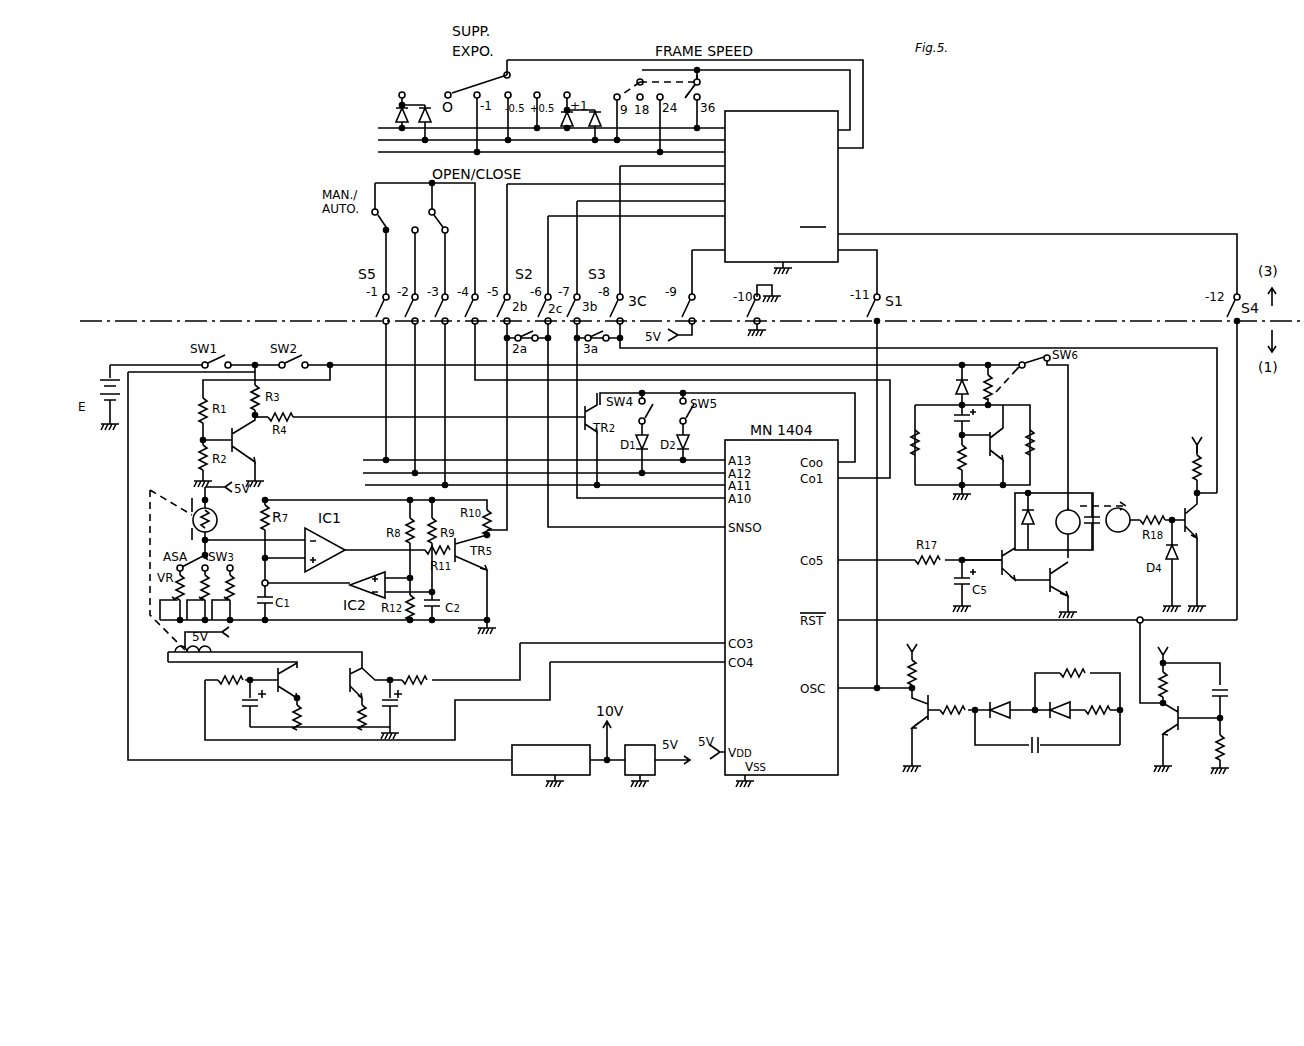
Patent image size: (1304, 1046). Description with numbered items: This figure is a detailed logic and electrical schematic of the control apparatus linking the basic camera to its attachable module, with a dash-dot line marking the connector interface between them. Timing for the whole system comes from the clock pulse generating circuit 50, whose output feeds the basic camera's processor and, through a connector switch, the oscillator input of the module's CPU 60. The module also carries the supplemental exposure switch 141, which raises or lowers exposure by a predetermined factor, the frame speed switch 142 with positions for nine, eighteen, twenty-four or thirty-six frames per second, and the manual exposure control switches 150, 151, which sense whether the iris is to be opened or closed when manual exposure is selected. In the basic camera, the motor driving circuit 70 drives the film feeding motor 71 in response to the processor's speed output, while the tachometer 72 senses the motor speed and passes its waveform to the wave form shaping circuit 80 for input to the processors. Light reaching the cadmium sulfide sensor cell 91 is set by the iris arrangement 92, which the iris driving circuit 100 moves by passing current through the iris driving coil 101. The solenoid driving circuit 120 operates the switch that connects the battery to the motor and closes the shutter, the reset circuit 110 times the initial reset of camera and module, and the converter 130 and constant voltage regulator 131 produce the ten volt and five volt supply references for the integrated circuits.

The supplemental exposure switch 141 is at (490, 88).
The frame speed switch 142 is at (632, 80).
The manual exposure control switch 150 is at (372, 222).
The manual exposure control switch 151 is at (448, 240).
The CPU 60 is at (838, 206).
The iris arrangement 92 is at (186, 502).
The sensor cell CdS 91 is at (215, 515).
The iris driving coil 101 is at (188, 656).
The iris driving circuit 100 is at (338, 755).
The converter 130 is at (520, 773).
The constant voltage regulator 131 is at (628, 772).
The solenoid driving circuit 120 is at (936, 501).
The motor driving circuit 70 is at (1037, 544).
The film feeding motor 71 is at (1072, 508).
The tachometer 72 is at (1110, 506).
The wave form shaping circuit 80 is at (1225, 573).
The clock pulse generating circuit 50 is at (996, 782).
The reset circuit 110 is at (1170, 787).